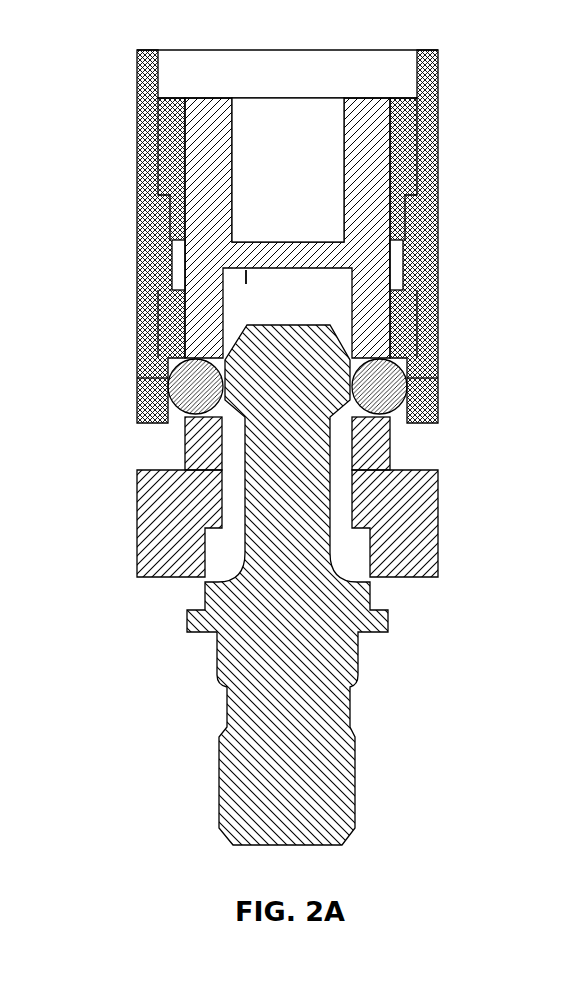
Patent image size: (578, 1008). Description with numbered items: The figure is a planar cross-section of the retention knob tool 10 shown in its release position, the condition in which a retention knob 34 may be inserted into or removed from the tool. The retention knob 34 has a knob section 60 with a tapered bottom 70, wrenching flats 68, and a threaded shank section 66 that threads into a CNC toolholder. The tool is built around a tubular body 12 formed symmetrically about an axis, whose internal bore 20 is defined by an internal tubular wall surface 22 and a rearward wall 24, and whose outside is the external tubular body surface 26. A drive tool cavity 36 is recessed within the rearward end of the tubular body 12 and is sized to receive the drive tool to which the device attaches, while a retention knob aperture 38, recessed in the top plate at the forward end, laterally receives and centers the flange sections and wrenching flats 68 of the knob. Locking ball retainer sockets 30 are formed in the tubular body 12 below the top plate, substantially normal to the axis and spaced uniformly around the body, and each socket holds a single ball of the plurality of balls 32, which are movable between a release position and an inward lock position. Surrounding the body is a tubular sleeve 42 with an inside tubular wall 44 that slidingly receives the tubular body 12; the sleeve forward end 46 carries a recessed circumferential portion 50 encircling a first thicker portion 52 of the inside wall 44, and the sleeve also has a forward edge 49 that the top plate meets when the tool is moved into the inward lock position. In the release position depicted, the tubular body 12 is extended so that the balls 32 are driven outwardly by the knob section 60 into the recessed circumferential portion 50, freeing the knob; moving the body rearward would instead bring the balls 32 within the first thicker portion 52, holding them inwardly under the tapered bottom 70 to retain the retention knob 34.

The retention knob tool 10 is at (137, 150).
The tubular body 12 is at (393, 140).
The internal bore 20 is at (271, 323).
The internal tubular wall surface 22 is at (232, 128).
The rearward wall 24 is at (245, 289).
The external tubular body surface 26 is at (368, 112).
The locking ball retainer sockets 30 is at (213, 415).
The balls 32 is at (138, 360).
The retention knob 34 is at (347, 710).
The drive tool cavity 36 is at (270, 184).
The retention knob aperture 38 is at (215, 563).
The tubular sleeve 42 is at (438, 267).
The inside tubular wall 44 is at (397, 258).
The sleeve forward end 46 is at (177, 375).
The forward edge 49 is at (438, 545).
The recessed circumferential portion 50 is at (413, 428).
The first thicker portion 52 is at (183, 305).
The knob section 60 is at (315, 340).
The threaded shank section 66 is at (355, 812).
The wrenching flats 68 is at (372, 598).
The tapered bottom 70 is at (210, 458).